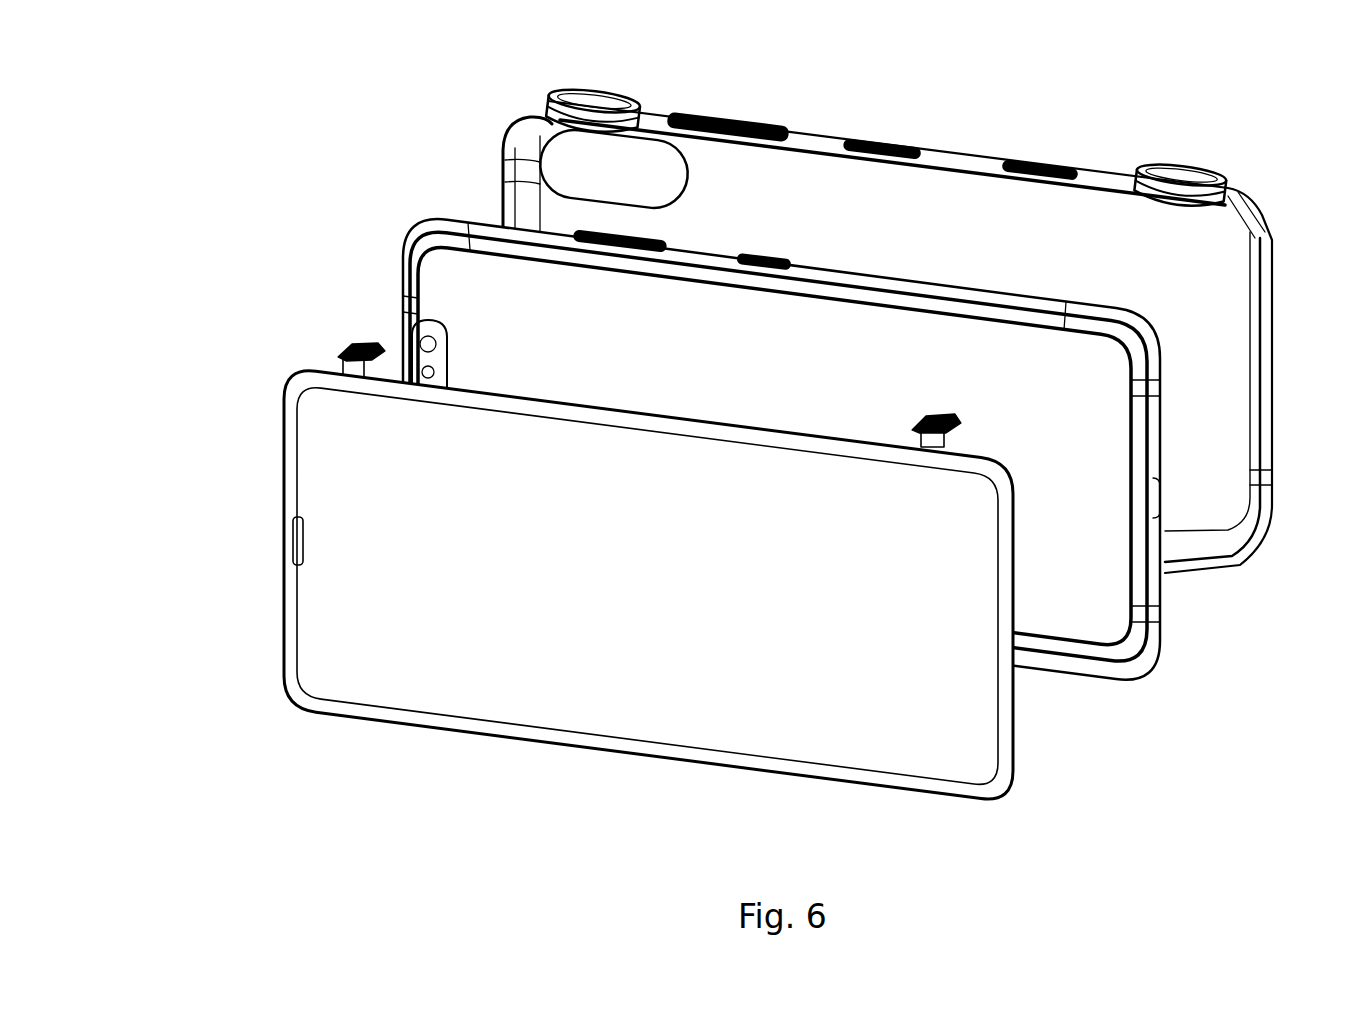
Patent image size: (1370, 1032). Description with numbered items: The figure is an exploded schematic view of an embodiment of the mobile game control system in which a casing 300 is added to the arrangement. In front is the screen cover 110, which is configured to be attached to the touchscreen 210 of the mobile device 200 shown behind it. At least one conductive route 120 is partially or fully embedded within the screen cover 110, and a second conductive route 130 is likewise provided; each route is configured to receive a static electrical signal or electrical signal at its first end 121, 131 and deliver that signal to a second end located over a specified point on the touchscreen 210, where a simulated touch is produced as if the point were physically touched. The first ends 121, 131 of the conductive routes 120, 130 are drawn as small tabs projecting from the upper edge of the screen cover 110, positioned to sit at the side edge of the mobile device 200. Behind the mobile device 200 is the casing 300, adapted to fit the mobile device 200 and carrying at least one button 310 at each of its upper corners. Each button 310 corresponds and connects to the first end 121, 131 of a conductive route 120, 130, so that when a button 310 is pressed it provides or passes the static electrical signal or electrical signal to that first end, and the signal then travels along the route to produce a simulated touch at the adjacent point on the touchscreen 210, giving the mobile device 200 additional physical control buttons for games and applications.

The screen cover 110 is at (323, 612).
The conductive route 120 is at (343, 366).
The first end 121 is at (352, 346).
The conductive route 130 is at (944, 443).
The first end 131 is at (952, 416).
The mobile device 200 is at (827, 483).
The touchscreen 210 is at (738, 368).
The casing 300 is at (1185, 500).
The button 310 is at (593, 97).